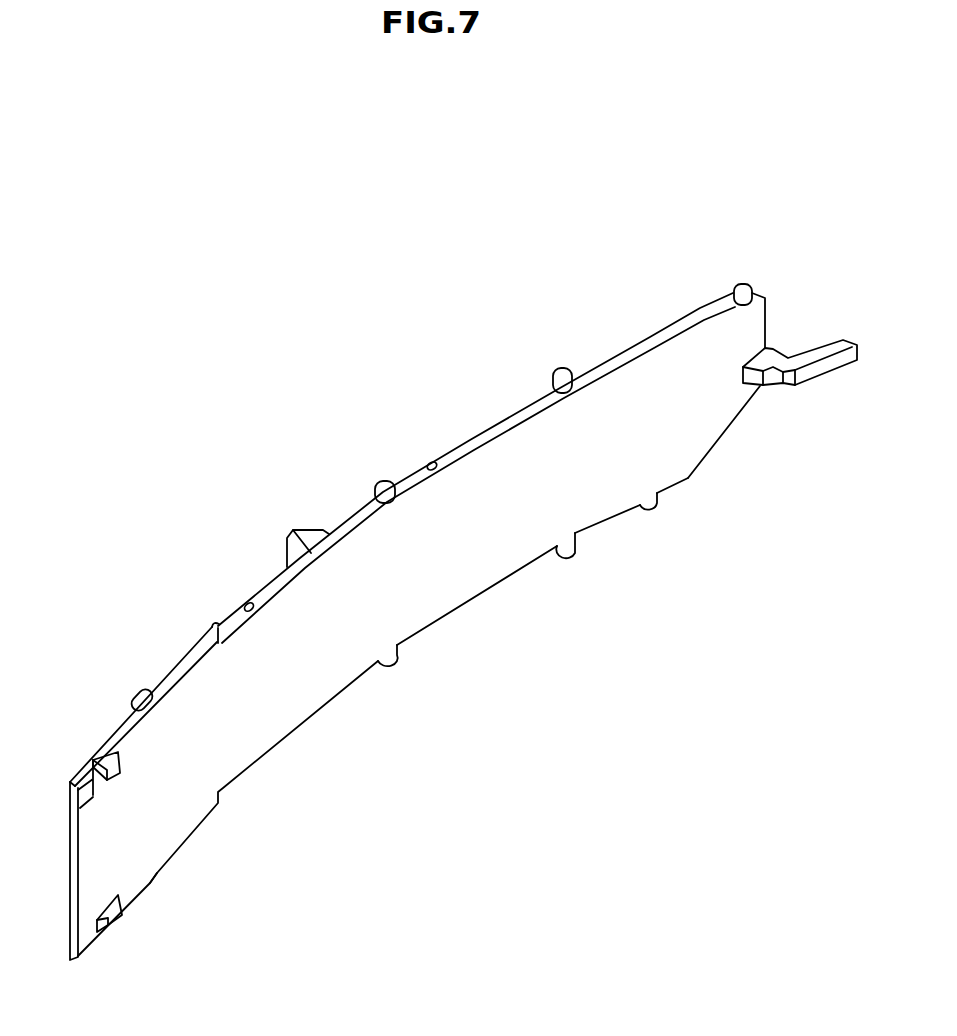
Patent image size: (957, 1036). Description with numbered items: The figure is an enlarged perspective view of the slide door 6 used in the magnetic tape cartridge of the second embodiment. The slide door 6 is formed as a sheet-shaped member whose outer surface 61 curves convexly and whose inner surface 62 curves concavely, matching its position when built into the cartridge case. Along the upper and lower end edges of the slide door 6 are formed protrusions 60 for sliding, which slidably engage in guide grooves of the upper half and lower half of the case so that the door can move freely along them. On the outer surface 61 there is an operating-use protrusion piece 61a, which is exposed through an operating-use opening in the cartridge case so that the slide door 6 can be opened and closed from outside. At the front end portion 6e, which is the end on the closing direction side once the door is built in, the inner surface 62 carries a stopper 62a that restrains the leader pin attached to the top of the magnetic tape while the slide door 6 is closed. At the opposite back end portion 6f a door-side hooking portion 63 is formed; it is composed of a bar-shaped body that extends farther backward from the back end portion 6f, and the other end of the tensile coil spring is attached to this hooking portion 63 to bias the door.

The slide door 6 is at (208, 548).
The front end portion 6e is at (93, 863).
The back end portion 6f is at (695, 438).
The protrusions for sliding 60 is at (385, 484).
The outer surface 61 is at (234, 613).
The operating-use protrusion piece 61a is at (309, 533).
The inner surface 62 is at (263, 677).
The stopper 62a is at (108, 758).
The door-side hooking portion 63 is at (816, 350).